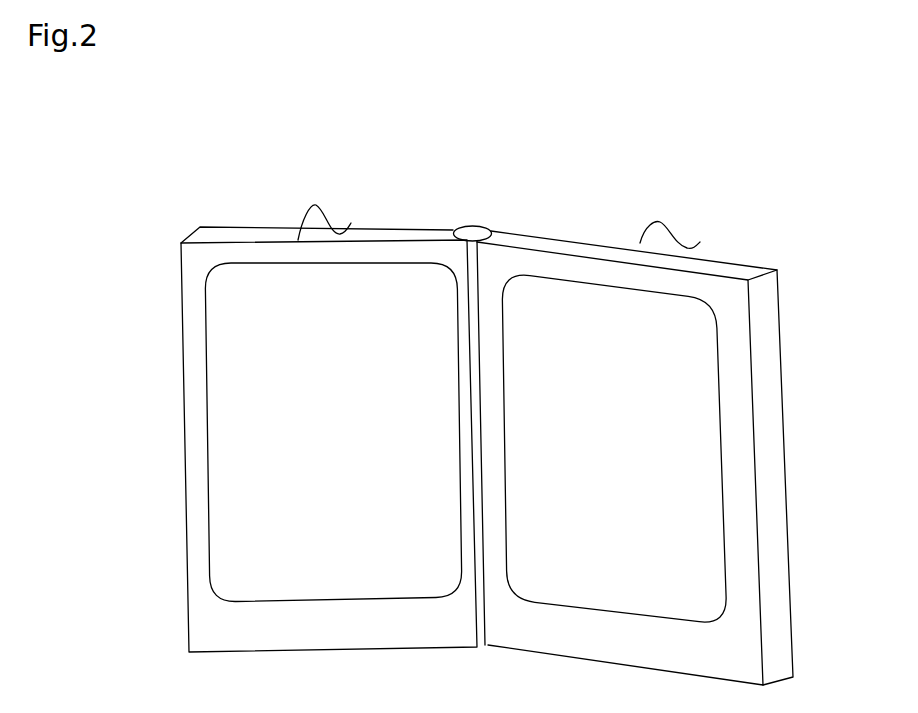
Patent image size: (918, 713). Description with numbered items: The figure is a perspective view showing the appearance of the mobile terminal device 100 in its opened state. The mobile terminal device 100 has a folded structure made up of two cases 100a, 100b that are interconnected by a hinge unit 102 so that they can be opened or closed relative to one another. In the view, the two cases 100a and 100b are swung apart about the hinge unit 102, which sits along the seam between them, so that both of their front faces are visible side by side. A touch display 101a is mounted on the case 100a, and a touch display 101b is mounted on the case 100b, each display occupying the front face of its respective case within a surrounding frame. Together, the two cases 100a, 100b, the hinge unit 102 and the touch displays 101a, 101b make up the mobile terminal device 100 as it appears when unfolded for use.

The mobile terminal device 100 is at (227, 191).
The case 100a is at (182, 402).
The case 100b is at (772, 449).
The touch display 101a is at (287, 287).
The touch display 101b is at (620, 305).
The hinge unit 102 is at (477, 232).